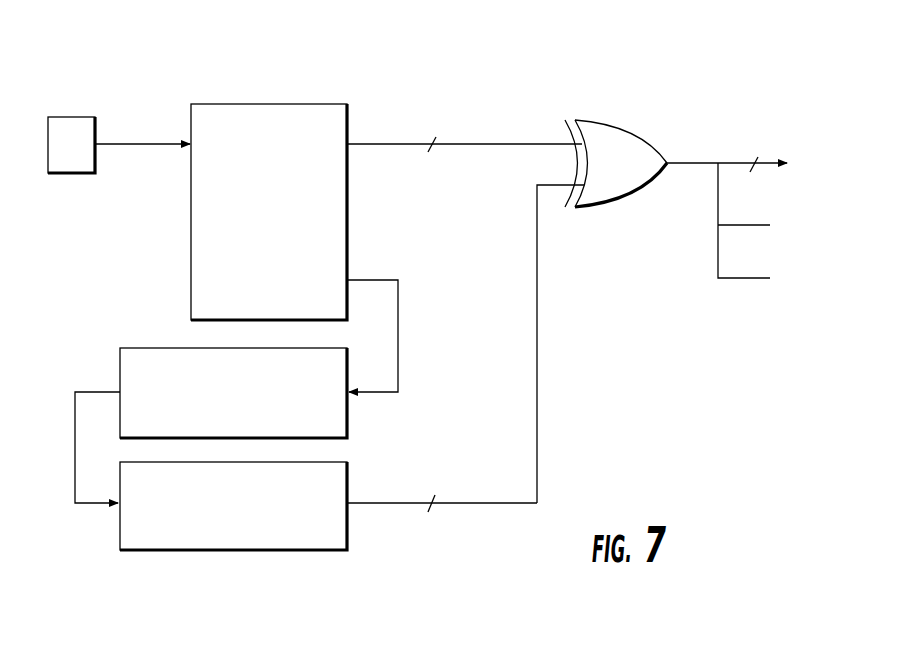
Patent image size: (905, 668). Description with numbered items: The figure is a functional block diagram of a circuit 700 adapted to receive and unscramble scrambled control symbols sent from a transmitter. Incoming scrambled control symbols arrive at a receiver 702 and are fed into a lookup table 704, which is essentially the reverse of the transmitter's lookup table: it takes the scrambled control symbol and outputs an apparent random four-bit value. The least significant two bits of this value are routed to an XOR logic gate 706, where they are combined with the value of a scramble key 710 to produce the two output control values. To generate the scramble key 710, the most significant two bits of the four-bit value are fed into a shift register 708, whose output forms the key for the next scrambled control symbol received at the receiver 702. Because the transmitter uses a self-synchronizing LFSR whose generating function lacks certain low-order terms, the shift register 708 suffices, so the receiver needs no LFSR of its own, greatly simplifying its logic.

The circuit 700 is at (702, 34).
The receiver 702 is at (82, 173).
The lookup table 704 is at (348, 116).
The XOR logic gate 706 is at (650, 139).
The shift register 708 is at (154, 347).
The scramble key 710 is at (200, 551).